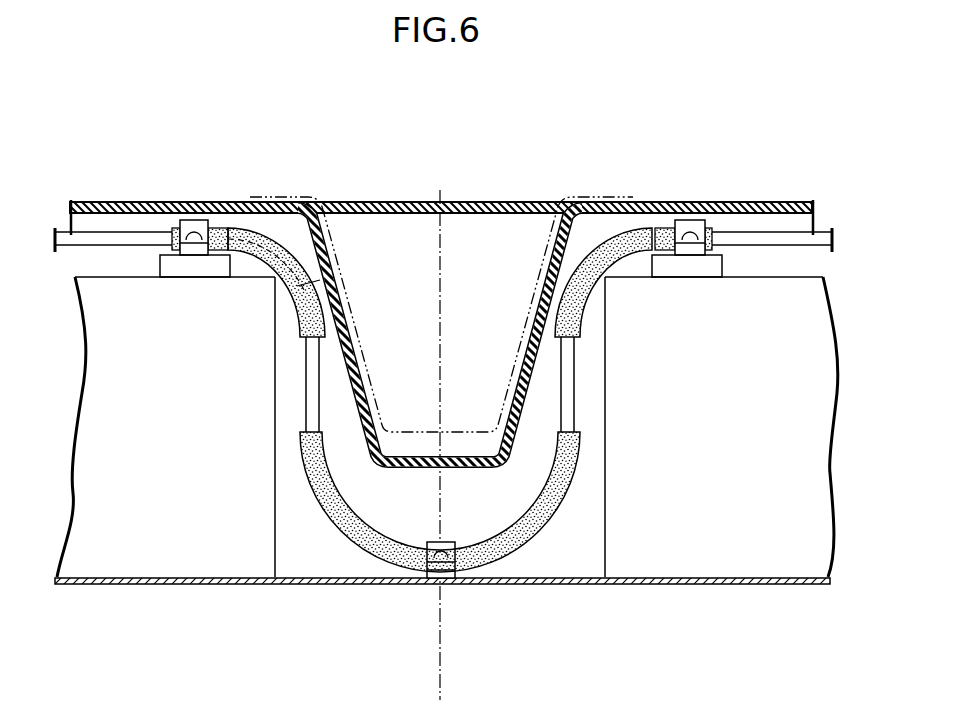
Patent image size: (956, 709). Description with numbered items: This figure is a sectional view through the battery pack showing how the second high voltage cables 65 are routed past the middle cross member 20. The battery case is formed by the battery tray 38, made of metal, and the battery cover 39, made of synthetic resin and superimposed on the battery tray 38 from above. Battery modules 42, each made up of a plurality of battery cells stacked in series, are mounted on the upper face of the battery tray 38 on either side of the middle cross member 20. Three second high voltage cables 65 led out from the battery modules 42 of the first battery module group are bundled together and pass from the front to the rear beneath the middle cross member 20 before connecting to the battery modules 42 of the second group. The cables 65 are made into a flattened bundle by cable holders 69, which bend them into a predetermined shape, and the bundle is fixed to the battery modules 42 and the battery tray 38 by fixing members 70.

The middle cross member 20 is at (543, 248).
The battery tray 38 is at (550, 584).
The battery cover 39 is at (787, 202).
The battery module 42 is at (144, 444).
The second high voltage cable 65 is at (578, 383).
The cable holder 69 is at (297, 308).
The fixing member 70 is at (193, 219).